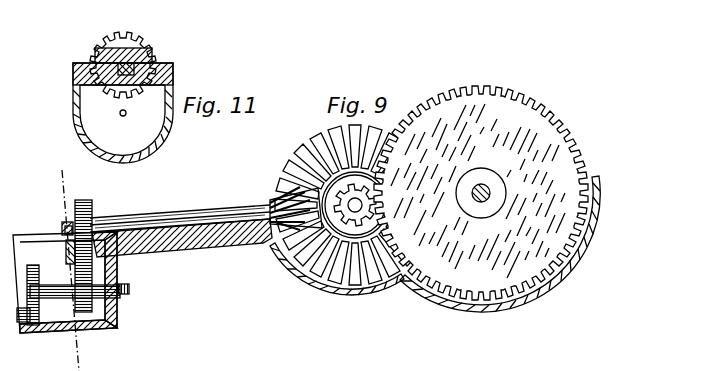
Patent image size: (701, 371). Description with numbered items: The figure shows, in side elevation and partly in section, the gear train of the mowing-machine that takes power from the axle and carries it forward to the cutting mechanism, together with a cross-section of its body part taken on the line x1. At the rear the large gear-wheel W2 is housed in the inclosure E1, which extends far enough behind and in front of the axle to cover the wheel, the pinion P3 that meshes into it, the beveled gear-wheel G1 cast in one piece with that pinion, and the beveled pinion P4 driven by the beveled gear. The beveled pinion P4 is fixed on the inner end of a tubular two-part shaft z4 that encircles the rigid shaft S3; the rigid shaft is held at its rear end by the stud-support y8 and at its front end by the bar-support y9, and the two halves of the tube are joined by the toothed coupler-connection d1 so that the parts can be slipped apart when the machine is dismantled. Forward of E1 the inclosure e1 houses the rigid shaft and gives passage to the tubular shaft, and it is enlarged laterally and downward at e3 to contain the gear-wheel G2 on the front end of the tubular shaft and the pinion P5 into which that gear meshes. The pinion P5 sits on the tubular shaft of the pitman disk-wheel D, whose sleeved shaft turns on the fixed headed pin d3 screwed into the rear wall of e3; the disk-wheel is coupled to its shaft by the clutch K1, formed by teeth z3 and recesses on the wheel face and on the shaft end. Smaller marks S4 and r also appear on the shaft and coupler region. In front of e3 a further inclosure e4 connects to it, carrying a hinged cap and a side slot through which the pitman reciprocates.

In FIG. 11, the gear-wheel G2 is at (126, 30).
In FIG. 9, the gear-wheel G2 is at (92, 204).
In FIG. 11, the bar-support y9 is at (160, 65).
In FIG. 9, the bar-support y9 is at (66, 212).
In FIG. 11, the downcast inclosure e3 is at (123, 113).
In FIG. 9, the downcast inclosure e3 is at (65, 282).
In FIG. 9, the inclosure e4 is at (47, 345).
In FIG. 9, the section line x' x' x1 is at (62, 261).
In FIG. 9, the rigid shaft S3 is at (62, 230).
In FIG. 9, the spring S4 is at (61, 255).
In FIG. 9, the pitman disk-wheel D is at (32, 285).
In FIG. 9, the clutch K1 is at (36, 318).
In FIG. 9, the pinion P5 is at (110, 278).
In FIG. 9, the fixed shaft or pin d3 is at (129, 290).
In FIG. 9, the inclosure e1 is at (170, 250).
In FIG. 9, the teeth z3 is at (218, 245).
In FIG. 9, the tubular two-part shaft z4 is at (180, 209).
In FIG. 9, the toothed coupler-connection d1 is at (204, 215).
In FIG. 9, the rod r is at (206, 208).
In FIG. 9, the beveled pinion P4 is at (282, 193).
In FIG. 9, the beveled gear-wheel G1 is at (355, 205).
In FIG. 9, the pinion P3 is at (376, 205).
In FIG. 9, the stud-support y8 is at (321, 193).
In FIG. 9, the gear-wheel W2 is at (481, 193).
In FIG. 9, the inclosure E1 is at (556, 283).